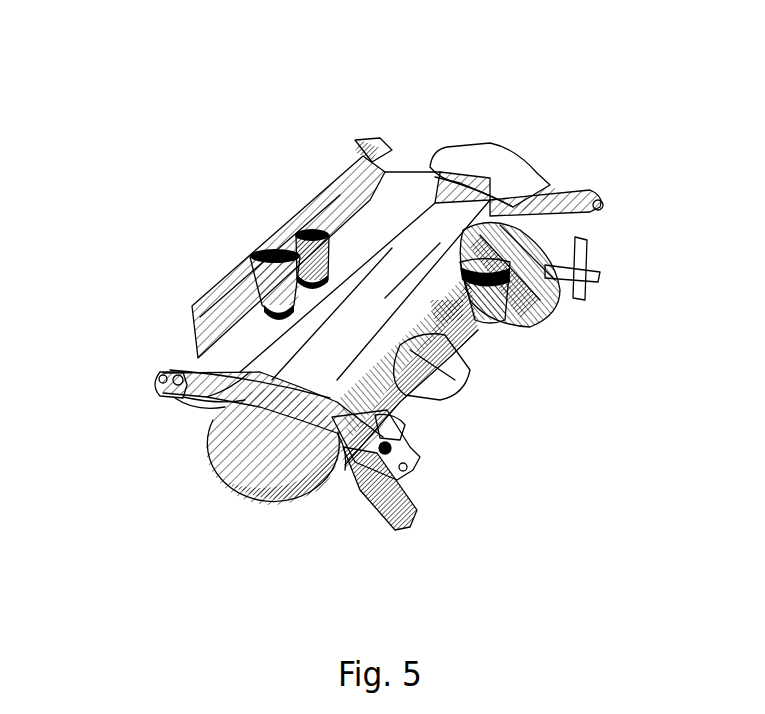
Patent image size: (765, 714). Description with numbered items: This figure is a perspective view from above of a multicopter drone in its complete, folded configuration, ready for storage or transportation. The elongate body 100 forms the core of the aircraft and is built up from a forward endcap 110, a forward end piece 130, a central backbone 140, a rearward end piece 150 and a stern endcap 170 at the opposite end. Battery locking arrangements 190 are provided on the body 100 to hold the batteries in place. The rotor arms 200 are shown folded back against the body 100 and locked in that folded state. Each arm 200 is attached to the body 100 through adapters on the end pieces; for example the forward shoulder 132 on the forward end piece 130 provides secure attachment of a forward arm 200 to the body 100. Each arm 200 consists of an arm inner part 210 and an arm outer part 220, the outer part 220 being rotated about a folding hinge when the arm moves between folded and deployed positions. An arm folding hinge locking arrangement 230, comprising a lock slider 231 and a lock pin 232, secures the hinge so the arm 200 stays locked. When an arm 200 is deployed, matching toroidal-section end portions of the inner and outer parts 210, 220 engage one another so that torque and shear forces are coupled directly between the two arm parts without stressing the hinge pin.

The body 100 is at (250, 505).
The forward endcap 110 is at (238, 468).
The forward end piece 130 is at (285, 403).
The forward shoulder 132 is at (233, 387).
The backbone 140 is at (403, 262).
The rearward end piece 150 is at (478, 178).
The stern endcap 170 is at (503, 158).
The battery locking arrangement 190 is at (250, 373).
The rotor arm 200 is at (525, 273).
The arm inner part 210 is at (370, 437).
The arm outer part 220 is at (392, 428).
The arm folding hinge locking arrangement 230 is at (163, 390).
The lock slider 231 is at (378, 145).
The lock pin 232 is at (368, 147).